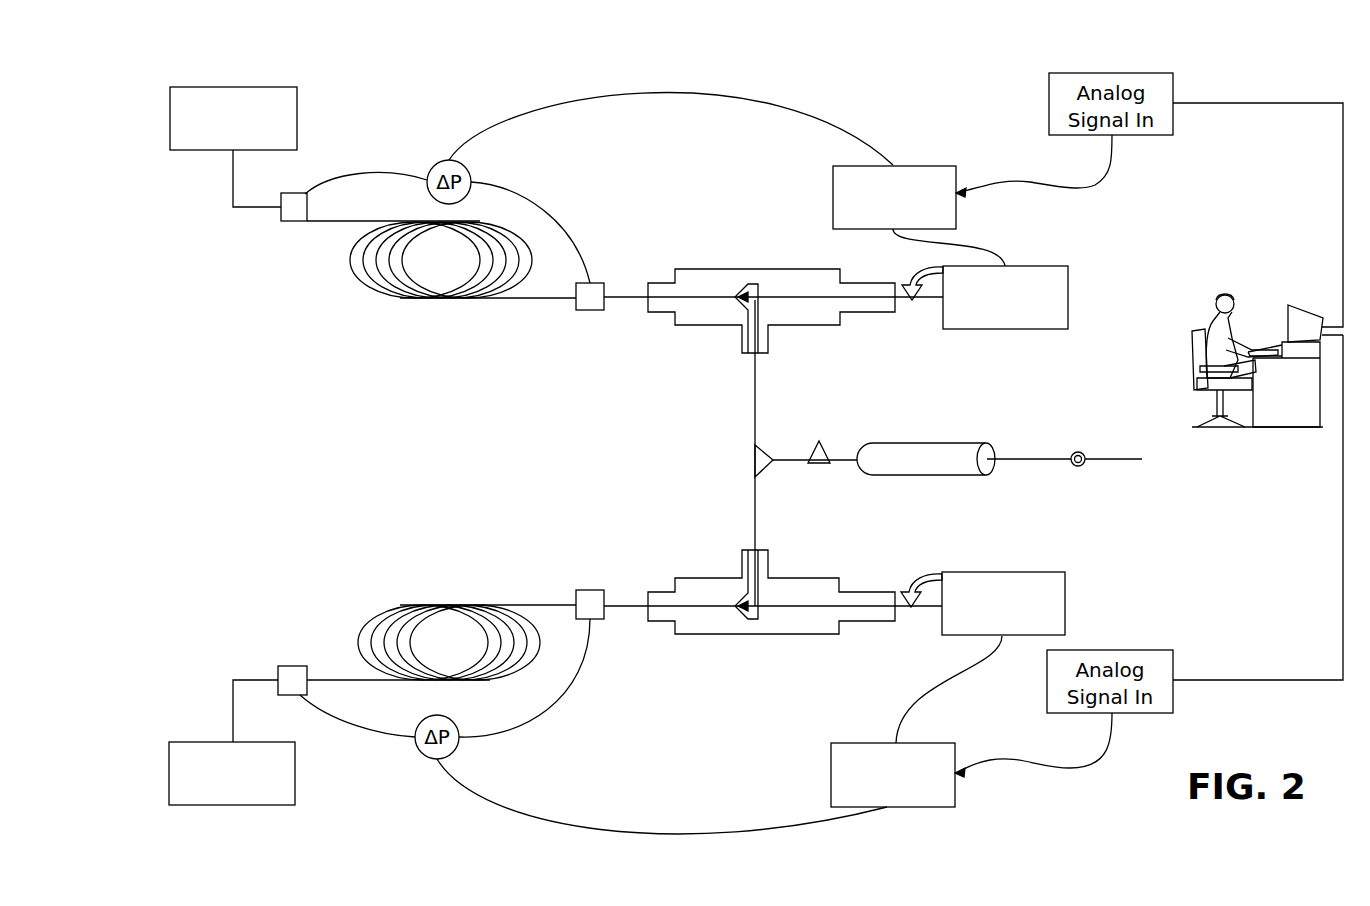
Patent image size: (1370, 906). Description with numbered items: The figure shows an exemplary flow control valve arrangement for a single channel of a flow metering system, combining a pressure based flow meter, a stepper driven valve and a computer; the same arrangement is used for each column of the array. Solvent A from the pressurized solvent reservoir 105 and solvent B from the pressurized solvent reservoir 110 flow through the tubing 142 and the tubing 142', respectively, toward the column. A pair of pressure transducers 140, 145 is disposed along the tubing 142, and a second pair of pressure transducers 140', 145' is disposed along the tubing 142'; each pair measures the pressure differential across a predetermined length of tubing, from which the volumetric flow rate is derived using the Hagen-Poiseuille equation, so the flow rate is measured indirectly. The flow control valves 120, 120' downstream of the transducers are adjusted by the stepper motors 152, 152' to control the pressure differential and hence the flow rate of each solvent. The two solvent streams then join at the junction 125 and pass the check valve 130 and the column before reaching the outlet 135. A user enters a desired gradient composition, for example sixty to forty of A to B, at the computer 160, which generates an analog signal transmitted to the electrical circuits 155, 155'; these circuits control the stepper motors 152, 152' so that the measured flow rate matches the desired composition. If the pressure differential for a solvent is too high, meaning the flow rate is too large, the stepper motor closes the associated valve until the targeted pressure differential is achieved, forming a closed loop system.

The pressurized solvent reservoir 105 is at (199, 87).
The pressurized solvent reservoir 110 is at (200, 742).
The flow control valve 120 is at (771, 289).
The flow control valve 120' is at (771, 581).
The mixing tee 125 is at (769, 448).
The check valve 130 is at (821, 441).
The outlet 135 is at (1078, 452).
The pressure transducer 140 is at (298, 232).
The pressure transducer 140' is at (289, 657).
The tubing 142 is at (441, 284).
The tubing 142' is at (449, 618).
The pressure transducer 145 is at (588, 321).
The pressure transducer 145' is at (586, 581).
The stepper motor 152 is at (985, 275).
The stepper motor 152' is at (985, 581).
The electrical circuit 155 is at (894, 174).
The electrical circuit 155' is at (893, 751).
The computer 160 is at (1306, 305).